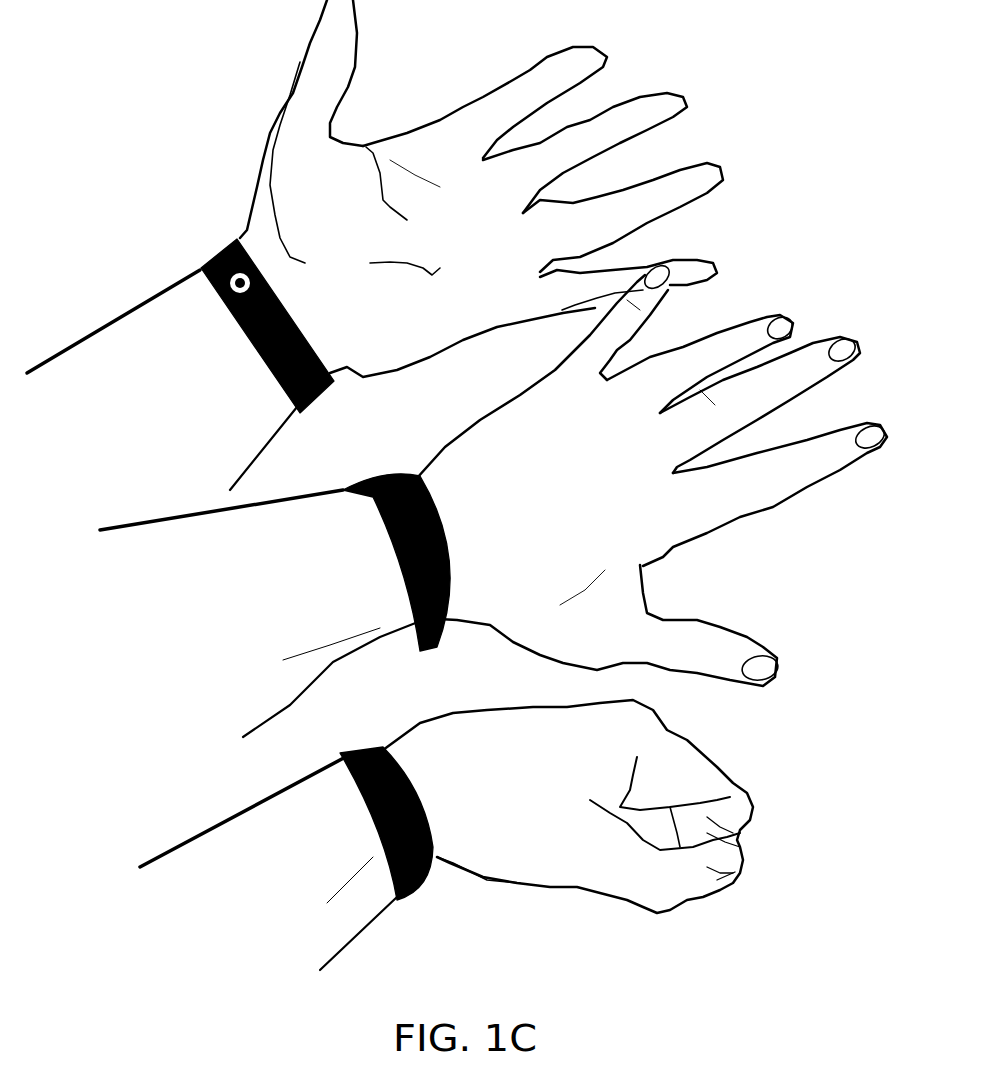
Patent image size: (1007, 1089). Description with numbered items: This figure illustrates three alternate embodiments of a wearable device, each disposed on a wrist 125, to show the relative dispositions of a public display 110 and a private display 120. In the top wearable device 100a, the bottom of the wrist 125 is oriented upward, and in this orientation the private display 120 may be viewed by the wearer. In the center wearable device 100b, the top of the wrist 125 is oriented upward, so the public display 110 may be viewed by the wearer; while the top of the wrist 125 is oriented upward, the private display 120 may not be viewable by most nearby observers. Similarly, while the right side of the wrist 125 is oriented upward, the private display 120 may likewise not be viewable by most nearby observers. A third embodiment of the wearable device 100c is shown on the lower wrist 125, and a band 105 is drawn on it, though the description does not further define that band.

The wrist 125 is at (120, 317).
The private display 120 is at (232, 316).
The public display 110 is at (400, 568).
The wearable band 105 is at (380, 832).
The top wearable device 100a is at (313, 314).
The center wearable device 100b is at (470, 510).
The wearable device 100c is at (438, 778).